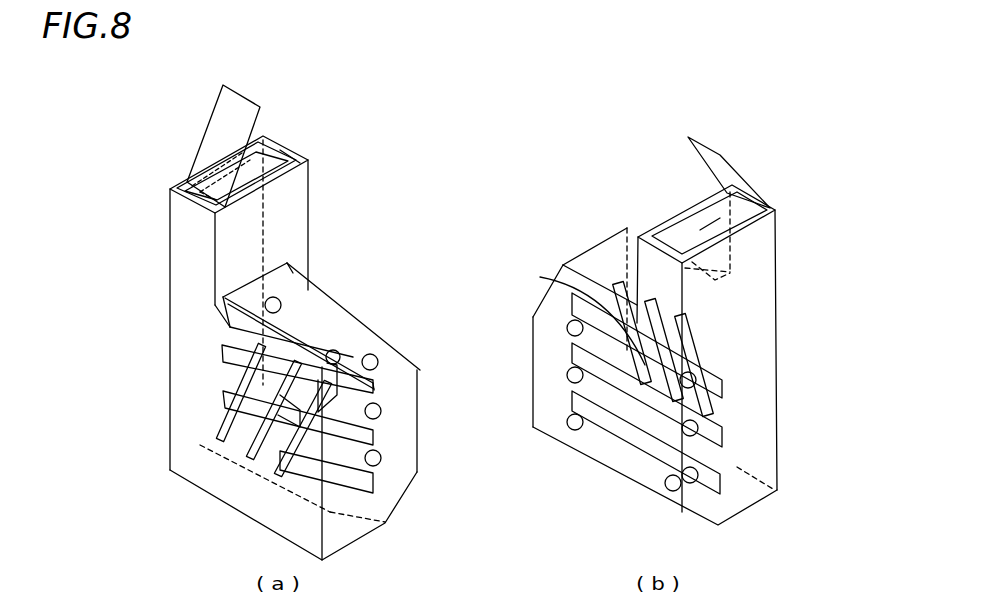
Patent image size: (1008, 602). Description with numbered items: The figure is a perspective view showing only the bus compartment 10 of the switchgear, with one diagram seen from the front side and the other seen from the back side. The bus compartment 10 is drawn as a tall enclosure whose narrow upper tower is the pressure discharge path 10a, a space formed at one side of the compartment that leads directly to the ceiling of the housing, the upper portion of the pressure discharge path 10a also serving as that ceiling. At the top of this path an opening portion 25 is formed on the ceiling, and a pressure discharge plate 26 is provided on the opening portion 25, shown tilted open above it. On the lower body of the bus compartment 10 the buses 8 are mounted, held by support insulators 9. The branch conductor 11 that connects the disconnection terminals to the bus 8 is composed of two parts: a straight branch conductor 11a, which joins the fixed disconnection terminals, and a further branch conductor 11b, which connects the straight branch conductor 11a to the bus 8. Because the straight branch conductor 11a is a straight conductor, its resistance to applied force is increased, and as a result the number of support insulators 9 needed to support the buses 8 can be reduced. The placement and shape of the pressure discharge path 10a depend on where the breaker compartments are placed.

The bus 8 is at (378, 442).
The support insulator 9 is at (378, 405).
The bus compartment 10 is at (347, 317).
The pressure discharge path 10a is at (170, 258).
The branch conductor 11 is at (470, 393).
The straight branch conductor 11a is at (233, 427).
The branch conductor 11b is at (233, 383).
The opening portion 25 is at (275, 163).
The pressure discharge plate 26 is at (201, 150).